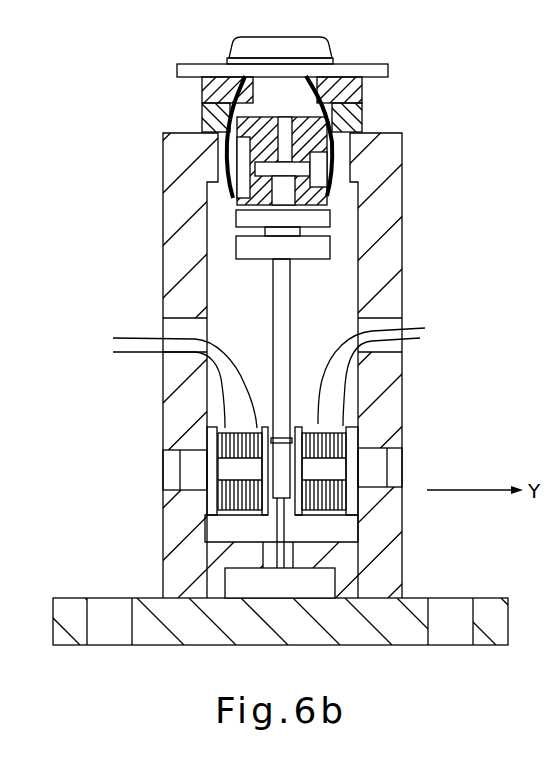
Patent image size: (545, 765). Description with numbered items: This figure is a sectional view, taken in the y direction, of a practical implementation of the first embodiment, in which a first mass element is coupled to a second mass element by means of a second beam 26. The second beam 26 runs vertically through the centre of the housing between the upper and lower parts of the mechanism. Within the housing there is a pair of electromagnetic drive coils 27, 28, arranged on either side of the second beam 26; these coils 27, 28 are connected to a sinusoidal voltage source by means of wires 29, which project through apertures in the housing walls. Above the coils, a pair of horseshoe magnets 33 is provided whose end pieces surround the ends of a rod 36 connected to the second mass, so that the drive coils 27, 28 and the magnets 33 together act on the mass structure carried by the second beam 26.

The second beam 26 is at (280, 334).
The electromagnetic drive coil 27 is at (237, 505).
The electromagnetic drive coil 28 is at (320, 505).
The wires 29 is at (143, 352).
The horseshoe magnets 33 is at (263, 252).
The rod 36 is at (278, 231).